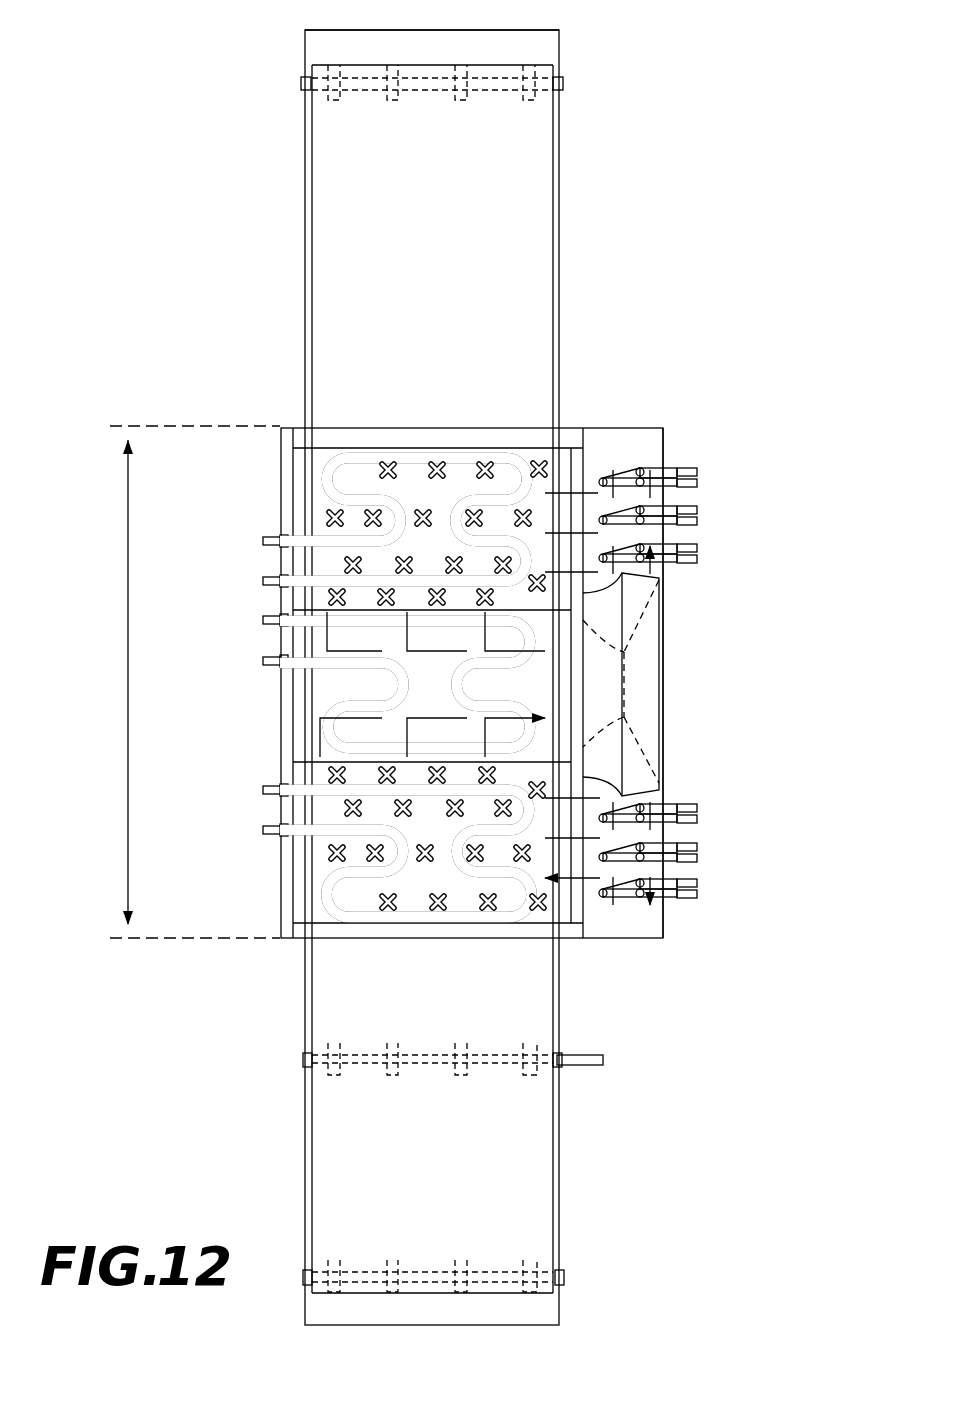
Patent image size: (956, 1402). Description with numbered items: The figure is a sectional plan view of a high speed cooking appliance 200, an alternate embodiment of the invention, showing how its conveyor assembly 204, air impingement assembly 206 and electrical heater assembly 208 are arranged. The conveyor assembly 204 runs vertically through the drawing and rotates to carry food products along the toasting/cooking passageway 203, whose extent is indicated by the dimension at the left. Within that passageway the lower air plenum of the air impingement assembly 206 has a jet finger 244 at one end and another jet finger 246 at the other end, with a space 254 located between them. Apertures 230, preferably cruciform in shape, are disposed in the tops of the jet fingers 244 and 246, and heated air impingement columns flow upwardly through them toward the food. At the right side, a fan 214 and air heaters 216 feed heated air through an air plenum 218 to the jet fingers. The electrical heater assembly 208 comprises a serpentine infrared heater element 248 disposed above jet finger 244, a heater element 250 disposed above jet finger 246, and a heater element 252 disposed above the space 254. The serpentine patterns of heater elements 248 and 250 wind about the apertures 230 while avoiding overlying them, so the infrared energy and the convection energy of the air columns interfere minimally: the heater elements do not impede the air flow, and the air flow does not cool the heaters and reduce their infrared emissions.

The high speed cooking appliance 200 is at (202, 175).
The conveyor assembly 204 is at (298, 232).
The electrical heater assembly 208 is at (268, 527).
The air plenum 218 is at (617, 435).
The air impingement assembly 206 is at (668, 438).
The toasting/cooking passageway 203 is at (127, 630).
The heater element 248 is at (263, 538).
The heater element 252 is at (263, 620).
The heater element 250 is at (263, 789).
The jet finger 244 is at (298, 462).
The space 254 is at (323, 692).
The jet finger 246 is at (300, 888).
The apertures 230 is at (480, 468).
The air heaters 216 is at (697, 554).
The fan 214 is at (664, 633).